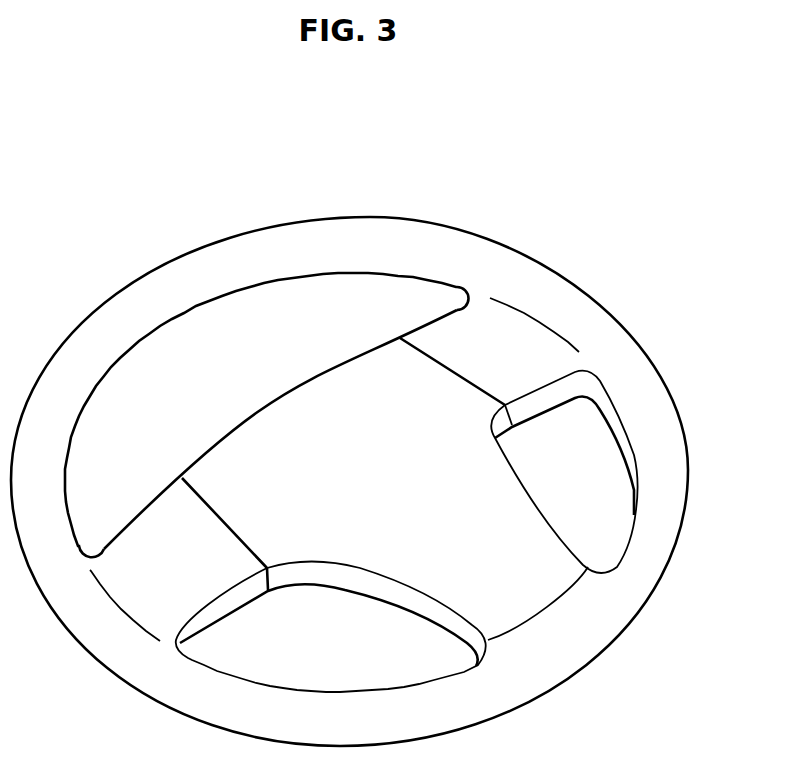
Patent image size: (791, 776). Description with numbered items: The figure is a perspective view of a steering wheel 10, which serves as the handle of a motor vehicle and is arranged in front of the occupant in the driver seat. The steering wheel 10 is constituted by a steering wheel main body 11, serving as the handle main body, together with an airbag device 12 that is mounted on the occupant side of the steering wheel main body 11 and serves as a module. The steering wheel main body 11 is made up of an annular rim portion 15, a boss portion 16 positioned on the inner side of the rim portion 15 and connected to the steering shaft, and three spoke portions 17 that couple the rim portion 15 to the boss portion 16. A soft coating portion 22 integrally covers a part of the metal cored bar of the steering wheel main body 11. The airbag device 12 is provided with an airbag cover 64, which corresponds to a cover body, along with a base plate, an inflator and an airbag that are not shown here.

The steering wheel 10 is at (126, 245).
The steering wheel main body 11 is at (253, 238).
The rim portion 15 is at (309, 230).
The soft coating portion 22 is at (657, 400).
The airbag device 12 is at (273, 413).
The boss portion 16 is at (328, 372).
The airbag cover 64 is at (217, 447).
The spoke portions 17 is at (476, 313).